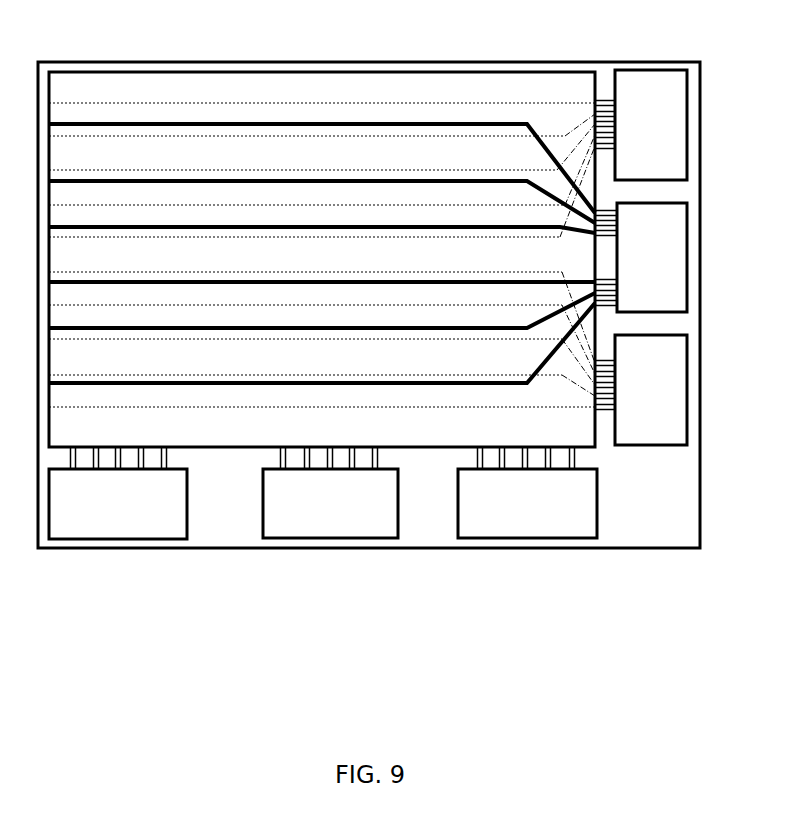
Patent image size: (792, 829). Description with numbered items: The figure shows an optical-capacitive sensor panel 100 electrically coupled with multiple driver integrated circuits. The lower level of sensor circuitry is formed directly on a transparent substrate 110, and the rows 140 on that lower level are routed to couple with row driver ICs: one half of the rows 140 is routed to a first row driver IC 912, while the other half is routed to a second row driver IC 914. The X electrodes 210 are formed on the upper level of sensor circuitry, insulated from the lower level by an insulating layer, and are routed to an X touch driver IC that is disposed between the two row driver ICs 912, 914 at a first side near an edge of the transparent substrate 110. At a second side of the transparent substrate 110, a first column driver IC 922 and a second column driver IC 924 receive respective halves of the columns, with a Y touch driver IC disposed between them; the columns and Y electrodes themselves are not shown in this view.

The optical-capacitive sensor panel 100 is at (112, 44).
The transparent substrate 110 is at (516, 52).
The rows 140 is at (437, 102).
The X electrodes 210 is at (330, 122).
The first row driver IC 912 is at (677, 95).
The second row driver IC 914 is at (89, 532).
The first column driver IC 922 is at (680, 233).
The second column driver IC 924 is at (297, 532).